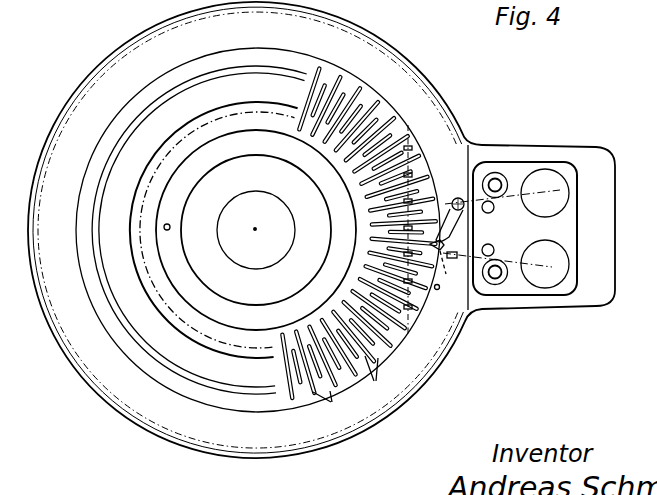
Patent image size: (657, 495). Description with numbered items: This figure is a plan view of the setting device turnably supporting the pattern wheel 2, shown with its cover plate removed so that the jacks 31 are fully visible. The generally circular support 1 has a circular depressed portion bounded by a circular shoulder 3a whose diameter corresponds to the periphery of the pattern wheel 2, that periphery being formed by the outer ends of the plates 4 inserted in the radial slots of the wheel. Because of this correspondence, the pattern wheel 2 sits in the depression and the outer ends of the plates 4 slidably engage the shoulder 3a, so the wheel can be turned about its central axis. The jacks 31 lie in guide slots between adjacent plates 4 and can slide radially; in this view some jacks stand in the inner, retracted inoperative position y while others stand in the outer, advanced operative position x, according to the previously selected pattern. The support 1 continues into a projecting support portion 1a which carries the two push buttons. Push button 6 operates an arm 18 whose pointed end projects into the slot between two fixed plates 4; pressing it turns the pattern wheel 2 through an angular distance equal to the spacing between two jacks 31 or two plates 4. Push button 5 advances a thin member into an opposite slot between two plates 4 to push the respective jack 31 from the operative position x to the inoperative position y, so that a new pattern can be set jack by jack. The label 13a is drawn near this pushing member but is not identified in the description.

The support 1 is at (400, 43).
The projecting support portion 1a is at (590, 300).
The pattern wheel 2 is at (255, 181).
The circular shoulder 3a is at (393, 324).
The jacks 31 is at (399, 139).
The plates 4 is at (447, 246).
The push button 5 is at (540, 292).
The push button 6 is at (546, 166).
The stop pin 13a is at (455, 275).
The arm 18 is at (445, 216).
The operative position x is at (371, 378).
The inoperative position y is at (327, 406).